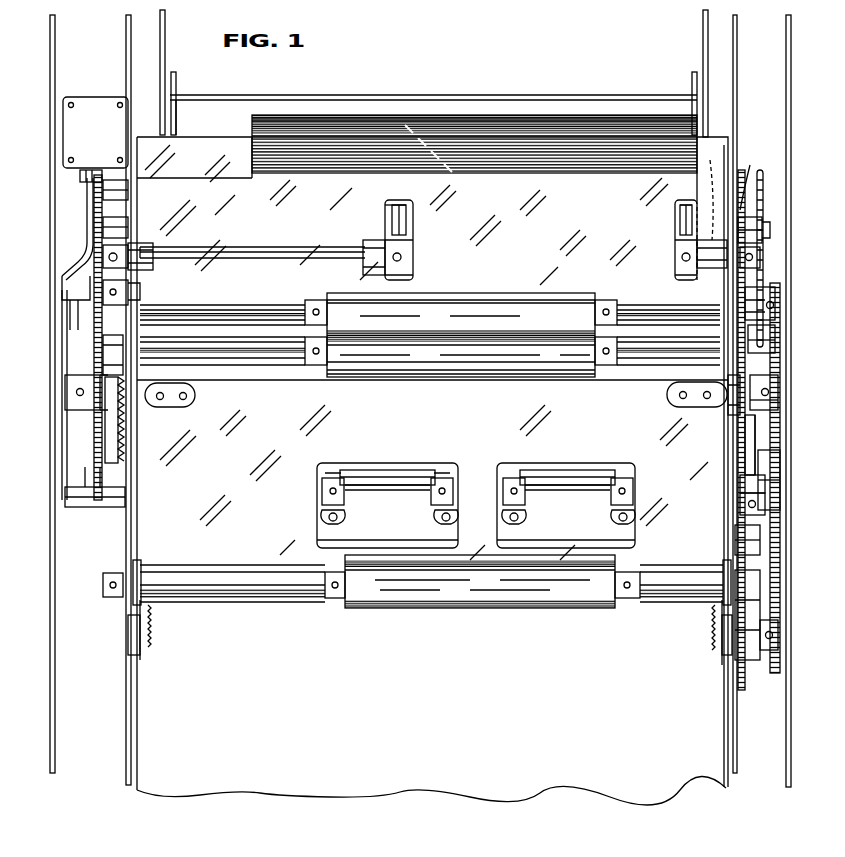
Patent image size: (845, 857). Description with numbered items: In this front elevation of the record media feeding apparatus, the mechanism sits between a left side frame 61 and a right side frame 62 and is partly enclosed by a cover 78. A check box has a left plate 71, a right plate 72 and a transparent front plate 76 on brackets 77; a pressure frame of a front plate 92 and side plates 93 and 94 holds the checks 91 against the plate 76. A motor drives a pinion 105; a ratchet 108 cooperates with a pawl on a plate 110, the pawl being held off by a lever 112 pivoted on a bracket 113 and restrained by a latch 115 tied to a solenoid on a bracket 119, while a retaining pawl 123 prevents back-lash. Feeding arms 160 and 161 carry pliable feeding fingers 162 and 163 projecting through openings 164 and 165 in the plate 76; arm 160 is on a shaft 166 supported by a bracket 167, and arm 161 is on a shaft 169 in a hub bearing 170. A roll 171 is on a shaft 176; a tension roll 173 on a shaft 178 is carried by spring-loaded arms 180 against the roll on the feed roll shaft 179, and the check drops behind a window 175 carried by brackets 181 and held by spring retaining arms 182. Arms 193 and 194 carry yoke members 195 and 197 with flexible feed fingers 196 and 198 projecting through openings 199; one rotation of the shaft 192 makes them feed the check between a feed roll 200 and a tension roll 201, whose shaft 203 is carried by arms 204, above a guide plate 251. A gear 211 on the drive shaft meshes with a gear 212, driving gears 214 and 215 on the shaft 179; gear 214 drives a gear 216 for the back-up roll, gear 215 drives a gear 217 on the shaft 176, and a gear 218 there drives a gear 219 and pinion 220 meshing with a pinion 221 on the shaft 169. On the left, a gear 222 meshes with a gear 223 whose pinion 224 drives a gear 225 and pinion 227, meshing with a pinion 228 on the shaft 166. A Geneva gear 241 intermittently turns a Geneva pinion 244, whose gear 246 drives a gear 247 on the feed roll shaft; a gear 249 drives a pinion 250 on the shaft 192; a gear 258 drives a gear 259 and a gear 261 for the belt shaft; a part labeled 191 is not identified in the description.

The left side frame 61 is at (128, 50).
The right side frame 62 is at (738, 36).
The left plate 71 is at (166, 28).
The right plate 72 is at (703, 27).
The transparent plate 76 is at (207, 153).
The bracket 77 is at (192, 135).
The cabinet or cover 78 is at (58, 33).
The checks 91 is at (313, 118).
The front plate 92 is at (437, 108).
The side plate 93 is at (176, 80).
The side plate 94 is at (692, 80).
The pinion 105 is at (124, 425).
The ratchet 108 is at (100, 385).
The plate 110 is at (95, 400).
The lever 112 is at (78, 272).
The bracket 113 is at (62, 433).
The latch 115 is at (82, 175).
The bracket 119 is at (95, 100).
The retaining pawl 123 is at (95, 507).
The feeding arm 160 is at (403, 243).
The feeding arm 161 is at (682, 243).
The feeding finger 162 is at (407, 203).
The feeding finger 163 is at (690, 205).
The opening 164 is at (385, 205).
The opening 165 is at (685, 212).
The shaft 166 is at (200, 258).
The bracket 167 is at (365, 240).
The shaft 169 is at (708, 242).
The hub bearing 170 is at (711, 219).
The roll 171 is at (530, 300).
The tension roll 173 is at (445, 362).
The window 175 is at (200, 570).
The shaft 176 is at (623, 312).
The shaft 178 is at (292, 358).
The shaft 179 is at (240, 340).
The arms 180 is at (120, 472).
The brackets 181 is at (195, 395).
The spring retaining arms 182 is at (140, 560).
The bearing 191 is at (300, 598).
The shaft 192 is at (315, 500).
The arms 193 is at (330, 478).
The arms 194 is at (510, 478).
The yoke member 195 is at (390, 485).
The feed finger 196 is at (385, 470).
The yoke member 197 is at (572, 490).
The feed finger 198 is at (560, 470).
The openings 199 is at (320, 540).
The feed roll 200 is at (497, 562).
The tension roll 201 is at (445, 600).
The shaft 203 is at (640, 596).
The arms 204 is at (130, 648).
The gear 211 is at (742, 445).
The gear 212 is at (745, 422).
The gear 214 is at (730, 388).
The gear 215 is at (775, 350).
The gear 216 is at (752, 280).
The gear 217 is at (775, 290).
The gear 218 is at (775, 303).
The gear 219 is at (765, 183).
The pinion 220 is at (760, 178).
The pinion 221 is at (762, 237).
The gear 222 is at (110, 362).
The gear 223 is at (128, 298).
The pinion 224 is at (97, 305).
The gear 225 is at (80, 265).
The pinion 227 is at (122, 225).
The pinion 228 is at (128, 245).
The Geneva gear 241 is at (778, 385).
The Geneva pinion 244 is at (740, 482).
The gear 246 is at (780, 432).
The gear 247 is at (758, 600).
The gear 249 is at (735, 540).
The pinion 250 is at (740, 500).
The guide plate 251 is at (218, 790).
The gear 258 is at (778, 400).
The gear 259 is at (780, 497).
The gear 261 is at (778, 645).